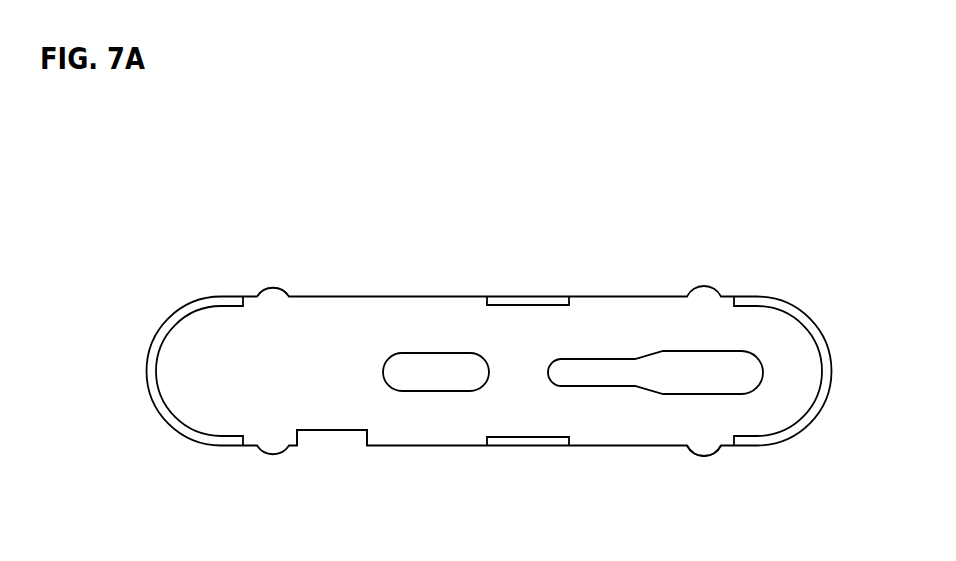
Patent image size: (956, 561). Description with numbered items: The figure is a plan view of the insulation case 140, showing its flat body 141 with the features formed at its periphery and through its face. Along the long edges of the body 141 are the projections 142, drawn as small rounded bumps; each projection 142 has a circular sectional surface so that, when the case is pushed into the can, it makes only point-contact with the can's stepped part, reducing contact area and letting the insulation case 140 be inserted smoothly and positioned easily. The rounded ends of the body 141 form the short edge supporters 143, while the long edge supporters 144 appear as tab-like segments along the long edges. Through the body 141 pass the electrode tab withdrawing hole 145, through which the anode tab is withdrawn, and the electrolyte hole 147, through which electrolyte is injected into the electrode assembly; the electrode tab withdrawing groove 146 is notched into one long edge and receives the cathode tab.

The insulation case 140 is at (613, 237).
The body 141 is at (615, 418).
The projection 142 is at (702, 458).
The short edge supporter 143 is at (168, 324).
The long edge supporter 144 is at (527, 302).
The electrode tab withdrawing hole 145 is at (682, 382).
The electrode tab withdrawing groove 146 is at (330, 430).
The electrolyte hole 147 is at (429, 380).